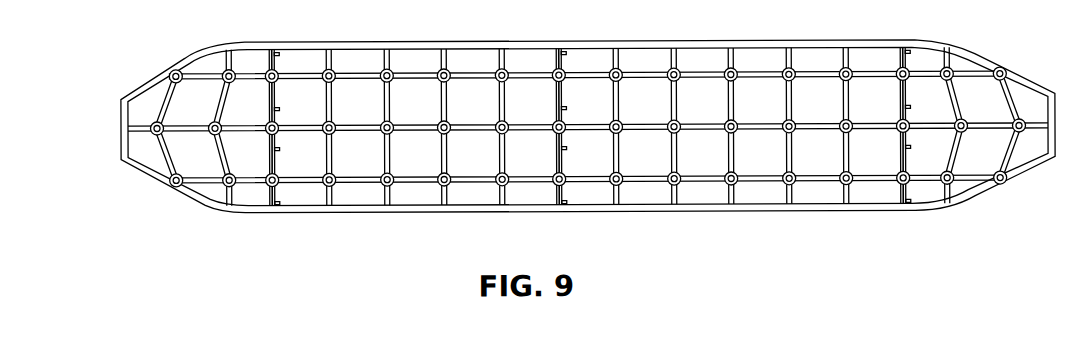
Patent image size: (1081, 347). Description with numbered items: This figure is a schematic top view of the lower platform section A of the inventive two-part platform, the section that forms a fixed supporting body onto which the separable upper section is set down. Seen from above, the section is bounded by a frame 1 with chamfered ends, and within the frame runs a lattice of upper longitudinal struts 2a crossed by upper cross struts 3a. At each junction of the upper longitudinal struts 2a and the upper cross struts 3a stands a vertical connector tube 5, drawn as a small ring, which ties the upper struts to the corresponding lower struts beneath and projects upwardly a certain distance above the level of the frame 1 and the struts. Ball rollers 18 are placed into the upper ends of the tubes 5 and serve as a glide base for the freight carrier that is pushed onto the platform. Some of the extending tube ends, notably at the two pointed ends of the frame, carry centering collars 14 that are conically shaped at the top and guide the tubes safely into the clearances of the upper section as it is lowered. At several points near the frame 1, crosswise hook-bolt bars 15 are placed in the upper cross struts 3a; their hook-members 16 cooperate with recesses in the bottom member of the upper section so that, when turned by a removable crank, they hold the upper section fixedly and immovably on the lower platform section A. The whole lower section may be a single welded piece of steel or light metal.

The frame 1 is at (303, 47).
The upper longitudinal struts 2a is at (350, 186).
The upper cross struts 3a is at (392, 105).
The connector tubes 5 is at (672, 68).
The centering collars 14 is at (1020, 122).
The hook-bolt bars 15 is at (278, 98).
The hook-members 16 is at (280, 110).
The ball rollers 18 is at (730, 186).
The lower platform section A is at (441, 187).